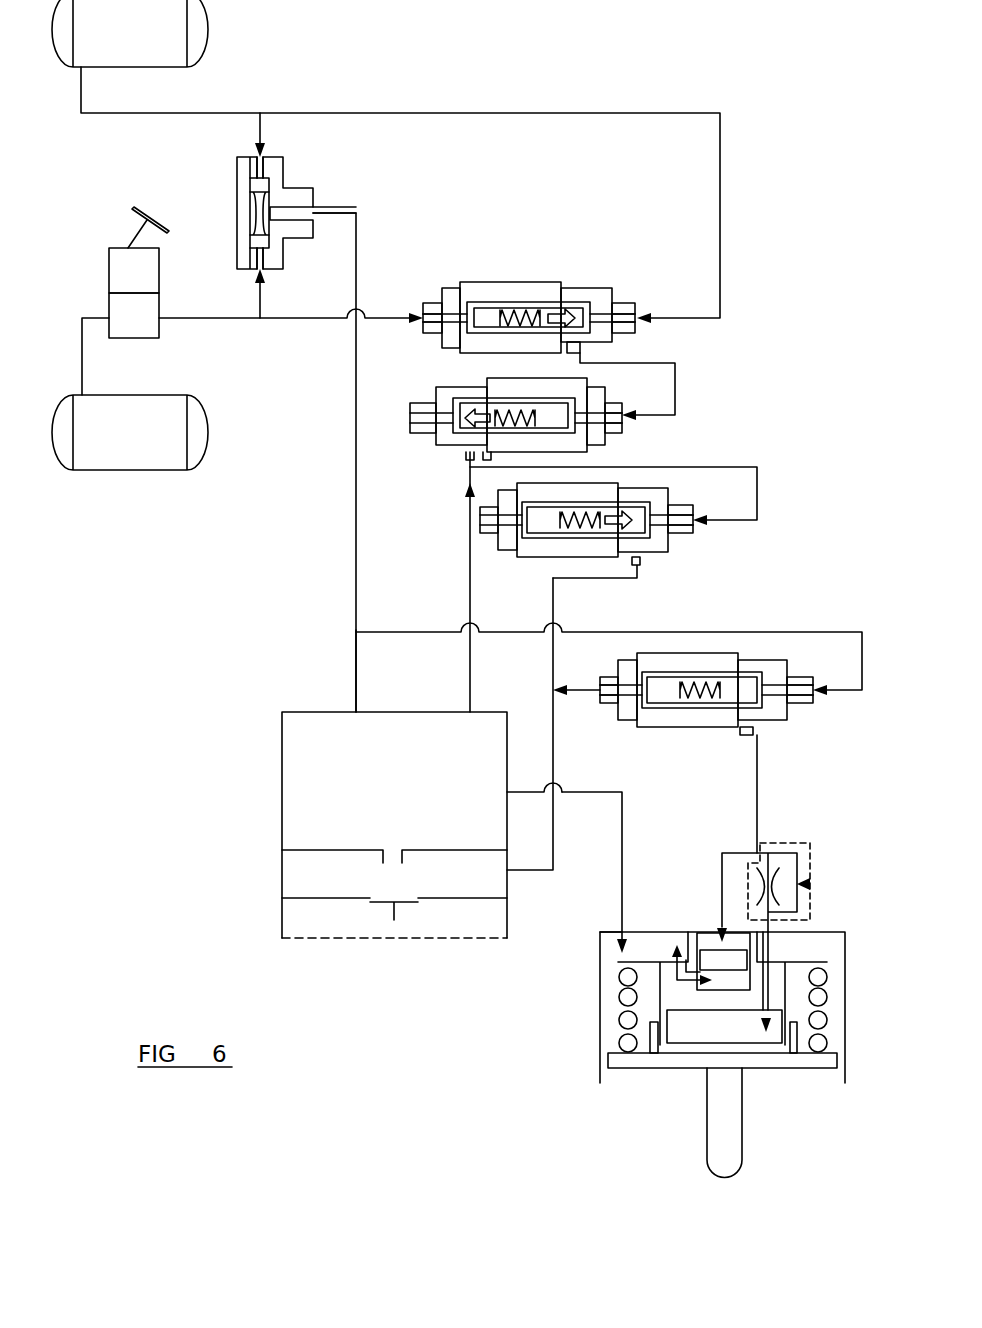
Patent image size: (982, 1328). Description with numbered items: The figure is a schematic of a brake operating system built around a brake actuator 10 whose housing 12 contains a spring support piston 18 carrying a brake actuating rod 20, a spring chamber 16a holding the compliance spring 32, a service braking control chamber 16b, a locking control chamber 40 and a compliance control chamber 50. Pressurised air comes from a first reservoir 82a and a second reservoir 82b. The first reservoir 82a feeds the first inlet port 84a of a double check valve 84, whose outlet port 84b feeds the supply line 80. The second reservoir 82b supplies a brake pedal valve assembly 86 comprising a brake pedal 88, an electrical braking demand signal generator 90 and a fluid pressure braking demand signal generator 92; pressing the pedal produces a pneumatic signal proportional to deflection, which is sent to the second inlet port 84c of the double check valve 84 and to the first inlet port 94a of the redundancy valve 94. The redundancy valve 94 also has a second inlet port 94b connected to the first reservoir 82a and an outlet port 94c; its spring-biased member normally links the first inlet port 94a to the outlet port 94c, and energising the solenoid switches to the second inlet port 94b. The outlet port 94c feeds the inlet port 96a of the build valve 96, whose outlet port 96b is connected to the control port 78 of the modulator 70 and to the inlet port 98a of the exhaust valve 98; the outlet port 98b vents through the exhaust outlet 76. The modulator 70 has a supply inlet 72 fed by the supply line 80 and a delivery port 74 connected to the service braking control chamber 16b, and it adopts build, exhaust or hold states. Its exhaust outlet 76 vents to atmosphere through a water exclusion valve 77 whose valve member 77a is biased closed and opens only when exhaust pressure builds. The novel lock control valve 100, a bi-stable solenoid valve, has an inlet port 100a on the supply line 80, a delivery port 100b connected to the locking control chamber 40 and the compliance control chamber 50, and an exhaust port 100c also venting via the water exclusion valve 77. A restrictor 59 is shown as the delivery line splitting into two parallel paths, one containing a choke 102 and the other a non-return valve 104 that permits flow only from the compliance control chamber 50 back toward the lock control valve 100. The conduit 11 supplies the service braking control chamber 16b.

The brake actuator 10 is at (673, 1019).
The supply conduit 11 is at (640, 820).
The housing 12 is at (598, 985).
The spring chamber 16a is at (615, 1018).
The service braking control chamber 16b is at (610, 938).
The spring support piston 18 is at (655, 1060).
The brake actuating rod 20 is at (725, 1152).
The compliance spring 32 is at (828, 1025).
The locking control chamber 40 is at (708, 942).
The compliance control chamber 50 is at (712, 1035).
The restrictor 59 is at (738, 850).
The modulator 70 is at (347, 867).
The supply inlet 72 is at (356, 712).
The delivery port 74 is at (508, 790).
The exhaust outlet 76 is at (392, 862).
The water exclusion valve 77 is at (268, 920).
The valve member 77a is at (385, 905).
The control port 78 is at (470, 712).
The supply line 80 is at (356, 560).
The first pressurised fluid reservoir 82a is at (149, 40).
The second pressurised fluid reservoir 82b is at (149, 444).
The double check valve 84 is at (329, 207).
The first inlet port 84a is at (262, 160).
The outlet port 84b is at (313, 212).
The second inlet port 84c is at (258, 270).
The brake pedal valve assembly 86 is at (129, 258).
The brake pedal 88 is at (148, 218).
The electrical braking demand signal generator 90 is at (109, 258).
The fluid pressure braking demand signal generator 92 is at (158, 330).
The redundancy valve 94 is at (522, 310).
The first inlet port 94a is at (418, 320).
The second inlet port 94b is at (648, 325).
The outlet port 94c is at (675, 363).
The build valve 96 is at (521, 445).
The inlet port 96a is at (630, 410).
The outlet port 96b is at (470, 457).
The exhaust valve 98 is at (641, 554).
The inlet port 98a is at (700, 527).
The outlet port 98b is at (640, 565).
The lock control valve 100 is at (714, 729).
The inlet port 100a is at (875, 752).
The delivery port 100b is at (757, 732).
The exhaust port 100c is at (600, 697).
The choke 102 is at (763, 886).
The non-return valve 104 is at (810, 884).